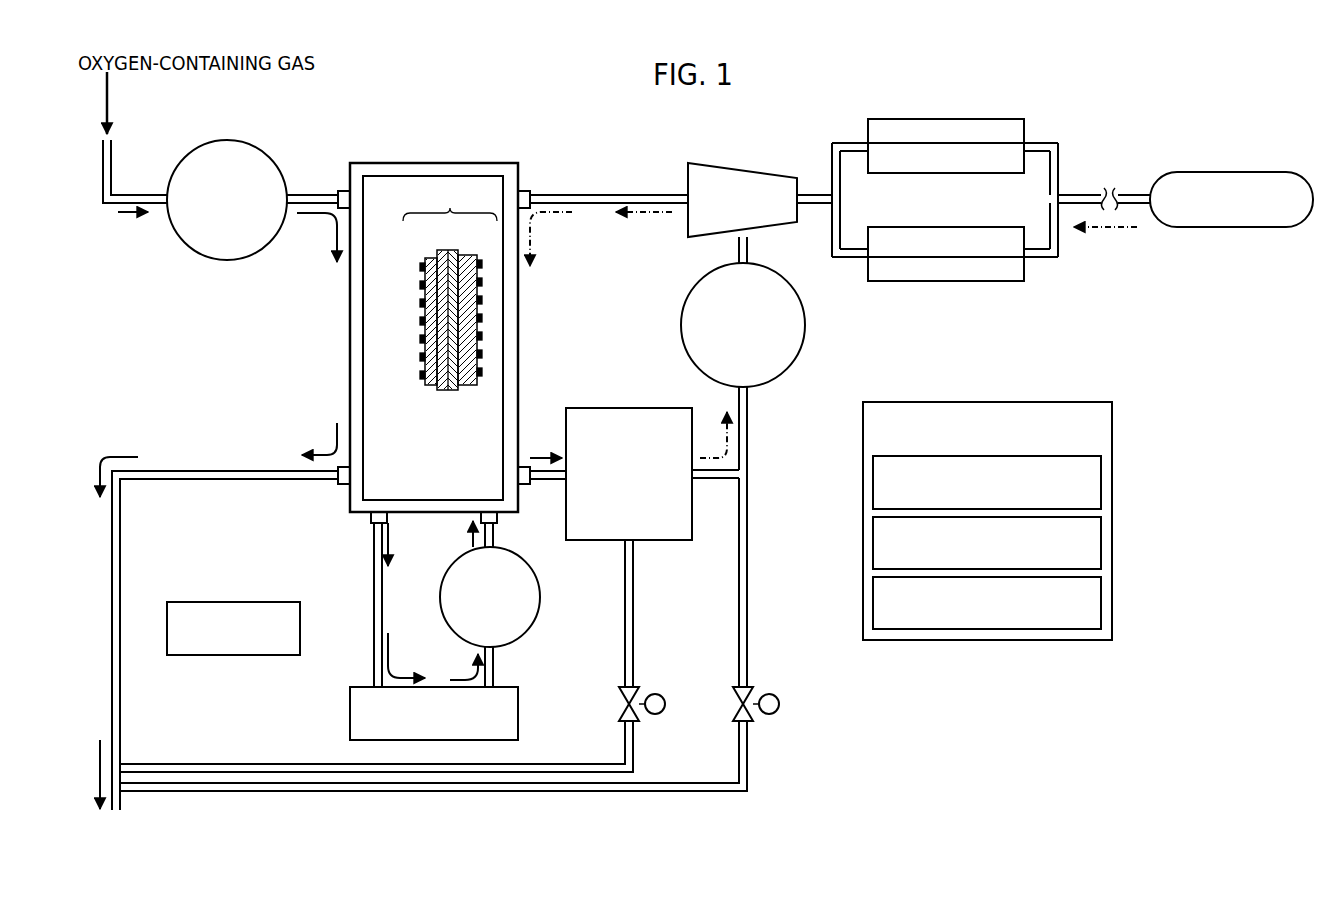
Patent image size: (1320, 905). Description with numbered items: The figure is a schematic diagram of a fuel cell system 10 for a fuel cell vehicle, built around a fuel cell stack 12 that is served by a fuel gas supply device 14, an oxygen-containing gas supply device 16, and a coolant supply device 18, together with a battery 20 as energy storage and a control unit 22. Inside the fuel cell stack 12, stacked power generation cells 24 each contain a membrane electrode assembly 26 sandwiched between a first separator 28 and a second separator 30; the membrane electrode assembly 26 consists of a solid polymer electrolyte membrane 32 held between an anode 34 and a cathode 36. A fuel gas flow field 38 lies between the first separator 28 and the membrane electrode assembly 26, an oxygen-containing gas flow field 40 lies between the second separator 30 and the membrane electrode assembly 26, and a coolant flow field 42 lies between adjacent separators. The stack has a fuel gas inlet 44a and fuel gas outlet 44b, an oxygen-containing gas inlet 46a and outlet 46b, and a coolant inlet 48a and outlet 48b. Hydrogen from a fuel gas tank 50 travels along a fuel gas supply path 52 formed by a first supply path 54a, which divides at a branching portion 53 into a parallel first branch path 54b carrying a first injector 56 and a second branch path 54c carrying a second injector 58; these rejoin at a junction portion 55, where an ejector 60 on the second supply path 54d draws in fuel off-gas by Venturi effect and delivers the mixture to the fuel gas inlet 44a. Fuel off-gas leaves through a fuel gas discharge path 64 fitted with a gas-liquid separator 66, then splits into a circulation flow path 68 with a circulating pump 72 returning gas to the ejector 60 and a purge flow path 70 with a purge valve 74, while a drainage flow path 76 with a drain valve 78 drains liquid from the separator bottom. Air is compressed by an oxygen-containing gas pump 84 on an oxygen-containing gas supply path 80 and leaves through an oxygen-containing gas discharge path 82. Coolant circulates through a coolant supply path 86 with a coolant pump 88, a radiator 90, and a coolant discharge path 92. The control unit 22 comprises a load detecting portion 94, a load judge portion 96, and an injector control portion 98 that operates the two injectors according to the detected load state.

The fuel cell system 10 is at (1250, 94).
The fuel cell stack 12 is at (451, 155).
The fuel gas supply device 14 is at (1079, 98).
The oxygen-containing gas supply device 16 is at (173, 150).
The coolant supply device 18 is at (333, 724).
The battery 20 is at (238, 602).
The control unit 22 is at (988, 402).
The power generation cell 24 is at (412, 187).
The membrane electrode assembly 26 is at (450, 202).
The first separator 28 is at (480, 283).
The second separator 30 is at (424, 270).
The solid polymer electrolyte membrane 32 is at (448, 250).
The anode 34 is at (458, 256).
The cathode 36 is at (440, 256).
The fuel gas flow field 38 is at (463, 347).
The oxygen-containing gas flow field 40 is at (430, 285).
The coolant flow field 42 is at (422, 362).
The fuel gas inlet 44a is at (525, 190).
The fuel gas outlet 44b is at (530, 486).
The oxygen-containing gas inlet 46a is at (345, 190).
The oxygen-containing gas outlet 46b is at (342, 486).
The coolant inlet 48a is at (480, 516).
The coolant outlet 48b is at (372, 524).
The fuel gas tank 50 is at (1243, 172).
The fuel gas supply path 52 is at (1140, 144).
The branching portion 53 is at (1050, 201).
The first supply path 54a is at (1086, 193).
The first branch path 54b is at (1050, 145).
The second branch path 54c is at (1053, 258).
The second supply path 54d is at (642, 194).
The junction portion 55 is at (840, 201).
The first injector 56 is at (992, 119).
The second injector 58 is at (992, 281).
The ejector 60 is at (742, 172).
The fuel gas discharge path 64 is at (710, 479).
The gas-liquid separator 66 is at (640, 408).
The circulation flow path 68 is at (747, 410).
The purge flow path 70 is at (747, 502).
The circulating pump 72 is at (800, 303).
The purge valve 74 is at (771, 694).
The drainage flow path 76 is at (203, 764).
The drain valve 78 is at (657, 694).
The oxygen-containing gas supply path 80 is at (149, 195).
The oxygen-containing gas discharge path 82 is at (270, 480).
The oxygen-containing gas pump 84 is at (243, 148).
The coolant supply path 86 is at (494, 545).
The coolant pump 88 is at (535, 617).
The radiator 90 is at (350, 700).
The coolant discharge path 92 is at (374, 608).
The load detecting portion 94 is at (1101, 472).
The load judge portion 96 is at (1101, 532).
The injector control portion 98 is at (1101, 592).